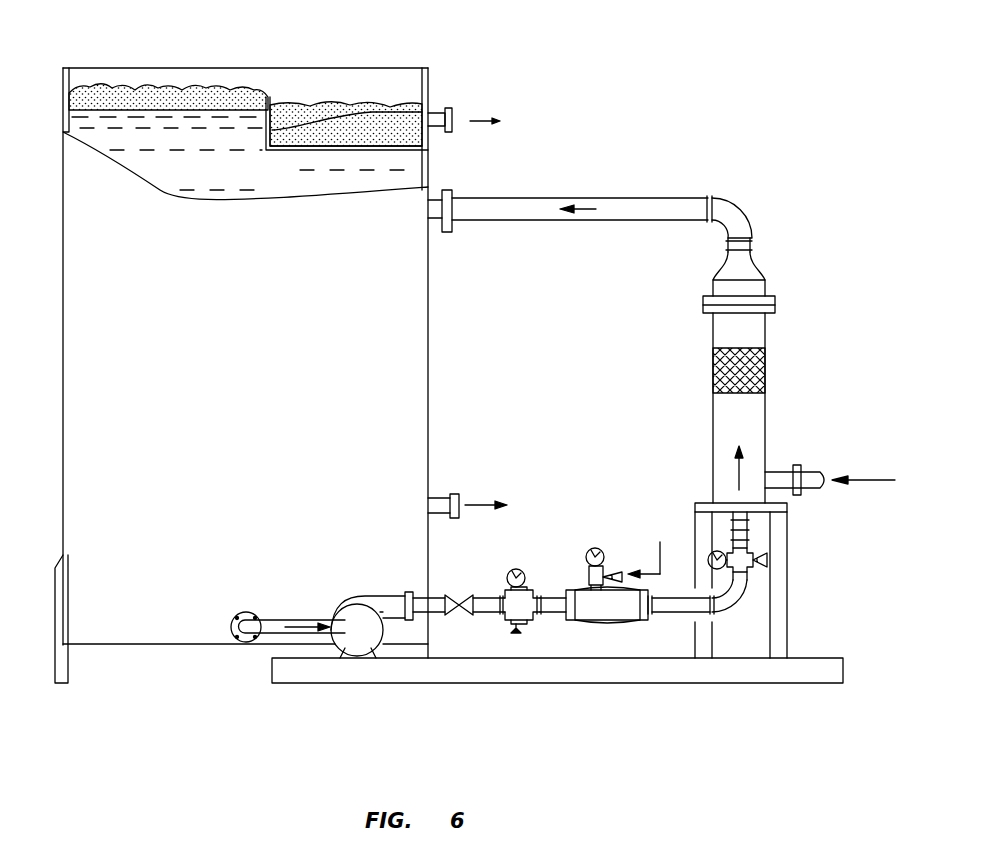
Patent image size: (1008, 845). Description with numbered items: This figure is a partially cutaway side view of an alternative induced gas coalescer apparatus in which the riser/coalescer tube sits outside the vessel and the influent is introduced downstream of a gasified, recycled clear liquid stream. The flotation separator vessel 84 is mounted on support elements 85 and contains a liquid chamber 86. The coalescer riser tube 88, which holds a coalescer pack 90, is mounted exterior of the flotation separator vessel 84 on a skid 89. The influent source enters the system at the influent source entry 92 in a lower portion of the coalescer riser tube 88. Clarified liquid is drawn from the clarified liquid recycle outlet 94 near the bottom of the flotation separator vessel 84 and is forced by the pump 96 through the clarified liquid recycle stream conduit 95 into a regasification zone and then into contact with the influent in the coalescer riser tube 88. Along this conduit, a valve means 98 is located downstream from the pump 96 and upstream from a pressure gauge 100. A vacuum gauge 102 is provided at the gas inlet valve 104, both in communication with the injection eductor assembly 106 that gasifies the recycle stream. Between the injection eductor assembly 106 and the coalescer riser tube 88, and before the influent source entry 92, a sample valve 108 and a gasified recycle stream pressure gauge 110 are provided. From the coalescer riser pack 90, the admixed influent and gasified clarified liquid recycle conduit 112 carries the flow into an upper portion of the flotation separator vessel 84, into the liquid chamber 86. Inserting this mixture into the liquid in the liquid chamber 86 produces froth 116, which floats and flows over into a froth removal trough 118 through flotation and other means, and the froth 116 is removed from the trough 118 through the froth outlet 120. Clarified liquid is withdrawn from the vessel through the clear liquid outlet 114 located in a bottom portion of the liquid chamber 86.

The flotation separator vessel 84 is at (272, 62).
The support elements 85 is at (70, 662).
The liquid chamber 86 is at (214, 184).
The coalescer riser tube 88 is at (766, 446).
The skid 89 is at (518, 688).
The coalescer pack 90 is at (766, 386).
The influent source entry 92 is at (858, 480).
The clarified liquid recycle outlet 94 is at (240, 612).
The clarified liquid recycle stream conduit 95 is at (308, 616).
The pump 96 is at (380, 593).
The valve means 98 is at (452, 598).
The pressure gauge 100 is at (520, 624).
The vacuum gauge 102 is at (593, 548).
The gas inlet valve 104 is at (660, 548).
The injection eductor assembly 106 is at (606, 622).
The sample valve 108 is at (770, 560).
The gasified recycle stream pressure gauge 110 is at (708, 558).
The admixed influent and gasified clarified liquid recycle conduit 112 is at (624, 198).
The clear liquid outlet 114 is at (478, 506).
The froth 116 is at (130, 88).
The froth removal trough 118 is at (340, 108).
The froth outlet 120 is at (452, 110).